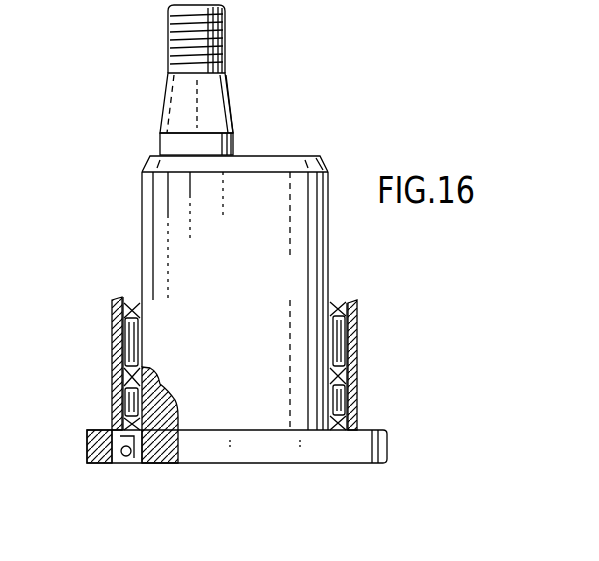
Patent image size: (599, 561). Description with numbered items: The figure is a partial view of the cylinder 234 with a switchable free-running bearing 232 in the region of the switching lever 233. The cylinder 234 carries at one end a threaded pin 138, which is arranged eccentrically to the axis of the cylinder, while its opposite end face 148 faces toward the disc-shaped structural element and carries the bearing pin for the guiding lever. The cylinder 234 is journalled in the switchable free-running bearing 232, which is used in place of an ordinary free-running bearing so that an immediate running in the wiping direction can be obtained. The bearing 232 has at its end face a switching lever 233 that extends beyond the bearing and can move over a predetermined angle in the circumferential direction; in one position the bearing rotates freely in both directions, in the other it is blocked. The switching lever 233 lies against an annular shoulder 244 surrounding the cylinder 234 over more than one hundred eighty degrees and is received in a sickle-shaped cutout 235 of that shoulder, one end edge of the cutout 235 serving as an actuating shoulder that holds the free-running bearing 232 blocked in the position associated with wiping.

The threaded pin 138 is at (222, 33).
The cylinder 234 is at (238, 255).
The switchable free-running bearing 232 is at (337, 338).
The annular shoulder 244 is at (368, 430).
The end face 148 is at (342, 463).
The switching lever 233 is at (118, 463).
The sickle-shaped cutout 235 is at (140, 458).